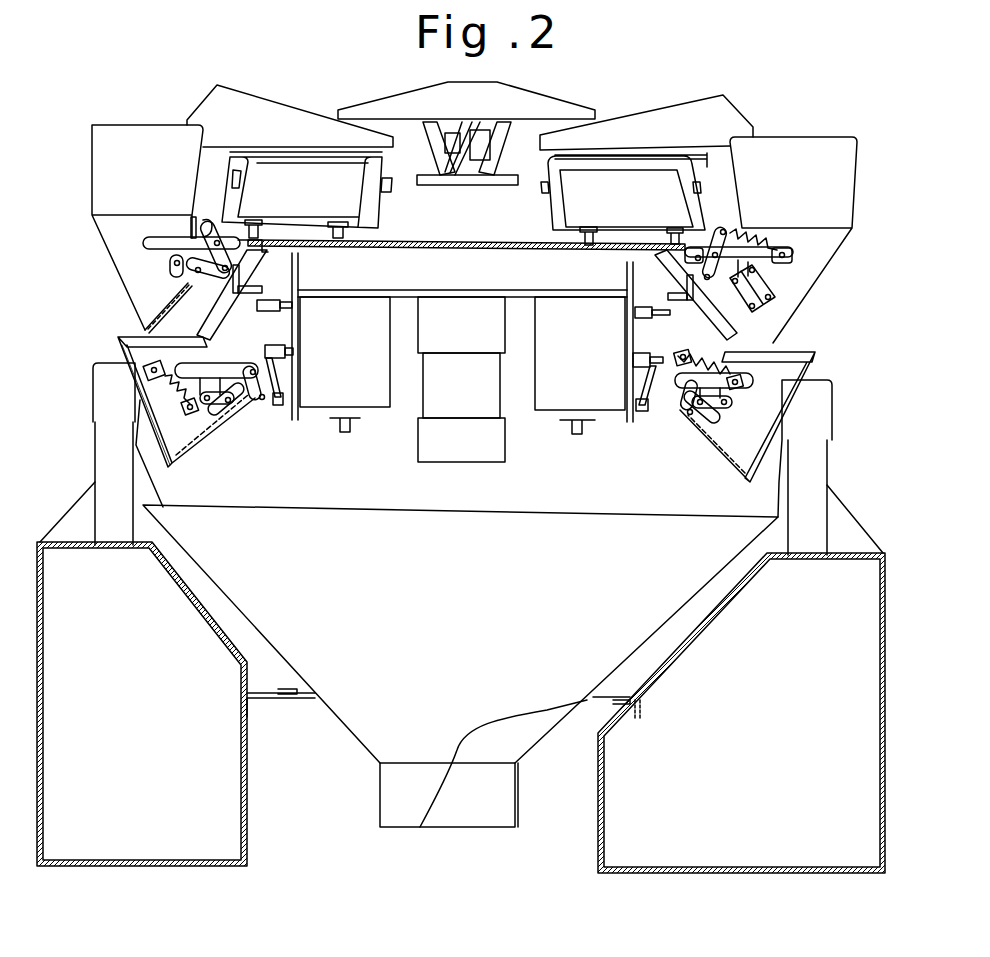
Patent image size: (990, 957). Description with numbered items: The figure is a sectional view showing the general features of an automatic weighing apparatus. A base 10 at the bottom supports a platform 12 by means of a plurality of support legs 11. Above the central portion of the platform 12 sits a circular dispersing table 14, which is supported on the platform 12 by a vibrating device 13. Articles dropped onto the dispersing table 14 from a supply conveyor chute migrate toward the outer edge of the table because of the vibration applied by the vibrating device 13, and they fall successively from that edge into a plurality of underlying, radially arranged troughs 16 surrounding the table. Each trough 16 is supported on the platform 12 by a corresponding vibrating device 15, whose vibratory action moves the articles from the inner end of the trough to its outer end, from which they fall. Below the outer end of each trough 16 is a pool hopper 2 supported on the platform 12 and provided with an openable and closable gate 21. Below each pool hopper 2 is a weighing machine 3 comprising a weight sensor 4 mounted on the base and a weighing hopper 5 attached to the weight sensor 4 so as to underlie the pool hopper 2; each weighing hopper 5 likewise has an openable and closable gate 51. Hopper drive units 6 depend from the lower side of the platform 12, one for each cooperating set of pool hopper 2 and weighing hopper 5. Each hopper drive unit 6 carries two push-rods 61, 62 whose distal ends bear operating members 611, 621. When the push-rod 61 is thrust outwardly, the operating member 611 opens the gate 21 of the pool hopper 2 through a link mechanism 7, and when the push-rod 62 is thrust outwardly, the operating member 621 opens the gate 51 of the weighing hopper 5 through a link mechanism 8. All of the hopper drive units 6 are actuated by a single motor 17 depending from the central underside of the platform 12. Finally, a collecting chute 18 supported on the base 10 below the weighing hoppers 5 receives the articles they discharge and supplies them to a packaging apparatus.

The pool hopper 2 is at (108, 240).
The weighing machine 3 is at (76, 349).
The weight sensor 4 is at (100, 388).
The weighing hopper 5 is at (198, 423).
The gate 51 is at (178, 457).
The hopper drive unit 6 is at (373, 398).
The link mechanism 7 is at (164, 270).
The link mechanism 8 is at (236, 408).
The base 10 is at (887, 577).
The support leg 11 is at (85, 505).
The platform 12 is at (398, 255).
The vibrating device 13 is at (518, 166).
The dispersing table 14 is at (396, 103).
The vibrating device 15 is at (393, 175).
The trough 16 is at (267, 110).
The motor 17 is at (497, 442).
The collecting chute 18 is at (372, 742).
The gate 21 is at (145, 312).
The push-rod 61 is at (275, 300).
The operating member 611 is at (233, 287).
The push-rod 62 is at (273, 352).
The operating member 621 is at (277, 398).